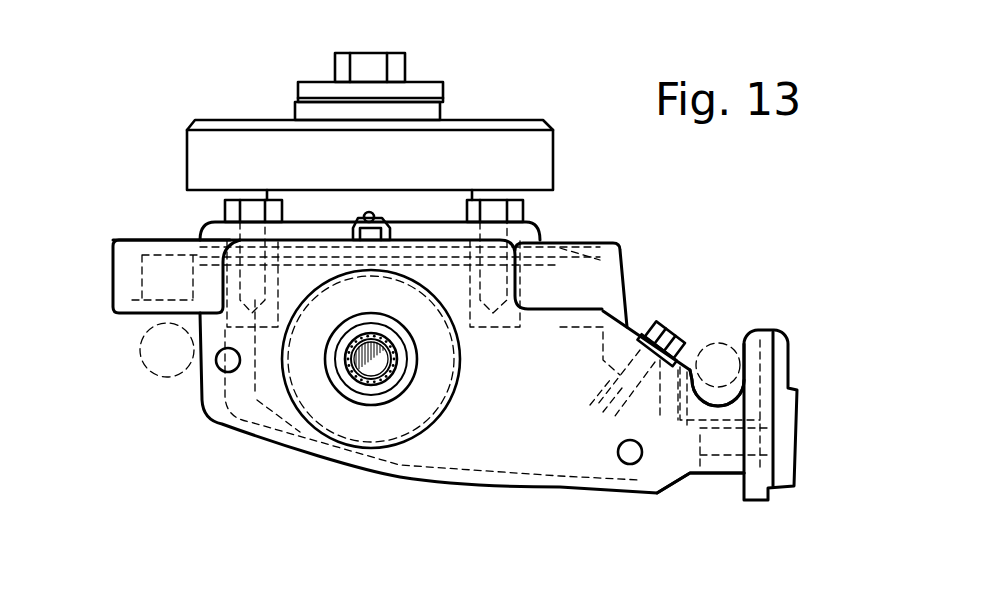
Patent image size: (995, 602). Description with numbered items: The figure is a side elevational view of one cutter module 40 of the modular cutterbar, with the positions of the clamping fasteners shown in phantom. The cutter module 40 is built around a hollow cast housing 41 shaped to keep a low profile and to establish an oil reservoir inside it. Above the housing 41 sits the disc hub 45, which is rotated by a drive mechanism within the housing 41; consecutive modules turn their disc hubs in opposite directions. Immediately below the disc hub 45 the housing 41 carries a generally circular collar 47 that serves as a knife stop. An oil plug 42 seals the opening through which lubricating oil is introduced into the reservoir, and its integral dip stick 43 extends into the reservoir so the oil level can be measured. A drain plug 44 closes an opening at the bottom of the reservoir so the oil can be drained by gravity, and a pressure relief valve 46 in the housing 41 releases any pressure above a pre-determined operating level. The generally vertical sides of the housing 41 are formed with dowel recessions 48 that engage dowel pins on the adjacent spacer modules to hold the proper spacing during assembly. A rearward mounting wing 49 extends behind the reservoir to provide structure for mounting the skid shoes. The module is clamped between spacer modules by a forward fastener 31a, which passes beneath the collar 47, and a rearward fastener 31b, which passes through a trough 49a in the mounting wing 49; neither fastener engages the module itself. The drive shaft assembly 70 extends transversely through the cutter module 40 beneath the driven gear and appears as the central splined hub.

The cutter module 40 is at (690, 198).
The housing 41 is at (248, 430).
The oil plug 42 is at (664, 318).
The dip stick 43 is at (590, 405).
The drain plug 44 is at (688, 478).
The disc hub 45 is at (555, 148).
The pressure relief valve 46 is at (362, 214).
The collar 47 is at (112, 272).
The dowel recessions 48 is at (237, 352).
The rearward mounting wing 49 is at (782, 348).
The trough 49a is at (720, 341).
The forward fastener 31a is at (145, 350).
The rearward fastener 31b is at (733, 345).
The drive shaft assembly 70 is at (358, 393).